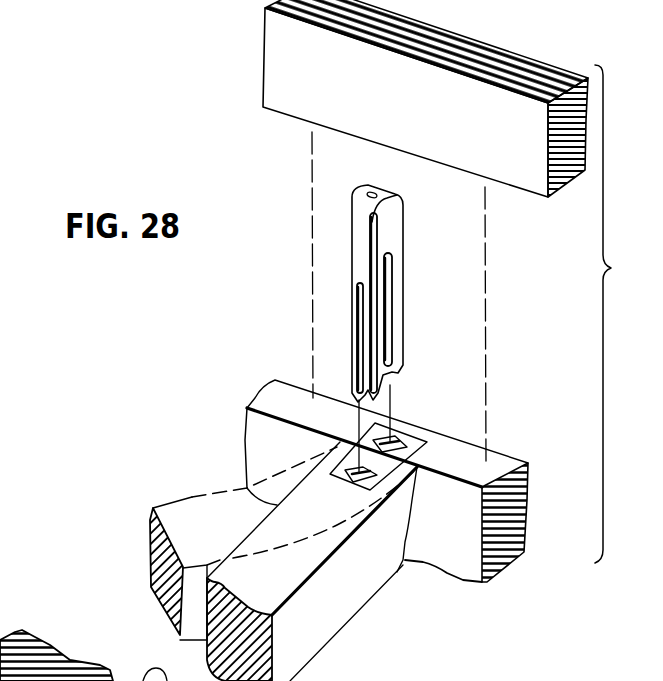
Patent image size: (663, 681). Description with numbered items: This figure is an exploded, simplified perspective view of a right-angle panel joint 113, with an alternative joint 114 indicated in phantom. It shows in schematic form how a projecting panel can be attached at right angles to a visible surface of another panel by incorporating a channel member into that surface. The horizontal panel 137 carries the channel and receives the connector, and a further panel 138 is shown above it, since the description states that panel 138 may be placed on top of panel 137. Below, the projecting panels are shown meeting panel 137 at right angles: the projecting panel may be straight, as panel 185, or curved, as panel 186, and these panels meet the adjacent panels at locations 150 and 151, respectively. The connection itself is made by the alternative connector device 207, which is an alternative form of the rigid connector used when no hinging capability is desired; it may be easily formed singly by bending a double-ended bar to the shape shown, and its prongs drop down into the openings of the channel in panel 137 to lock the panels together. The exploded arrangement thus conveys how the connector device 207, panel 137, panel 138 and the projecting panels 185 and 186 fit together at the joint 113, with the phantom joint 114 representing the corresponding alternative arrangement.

The joint 113 is at (341, 302).
The joint 114 is at (341, 530).
The panel 137 is at (401, 530).
The panel 138 is at (293, 108).
The meeting location 150 is at (393, 574).
The meeting location 151 is at (412, 543).
The straight panel 185 is at (347, 613).
The curved panel 186 is at (193, 497).
The connector device 207 is at (405, 200).